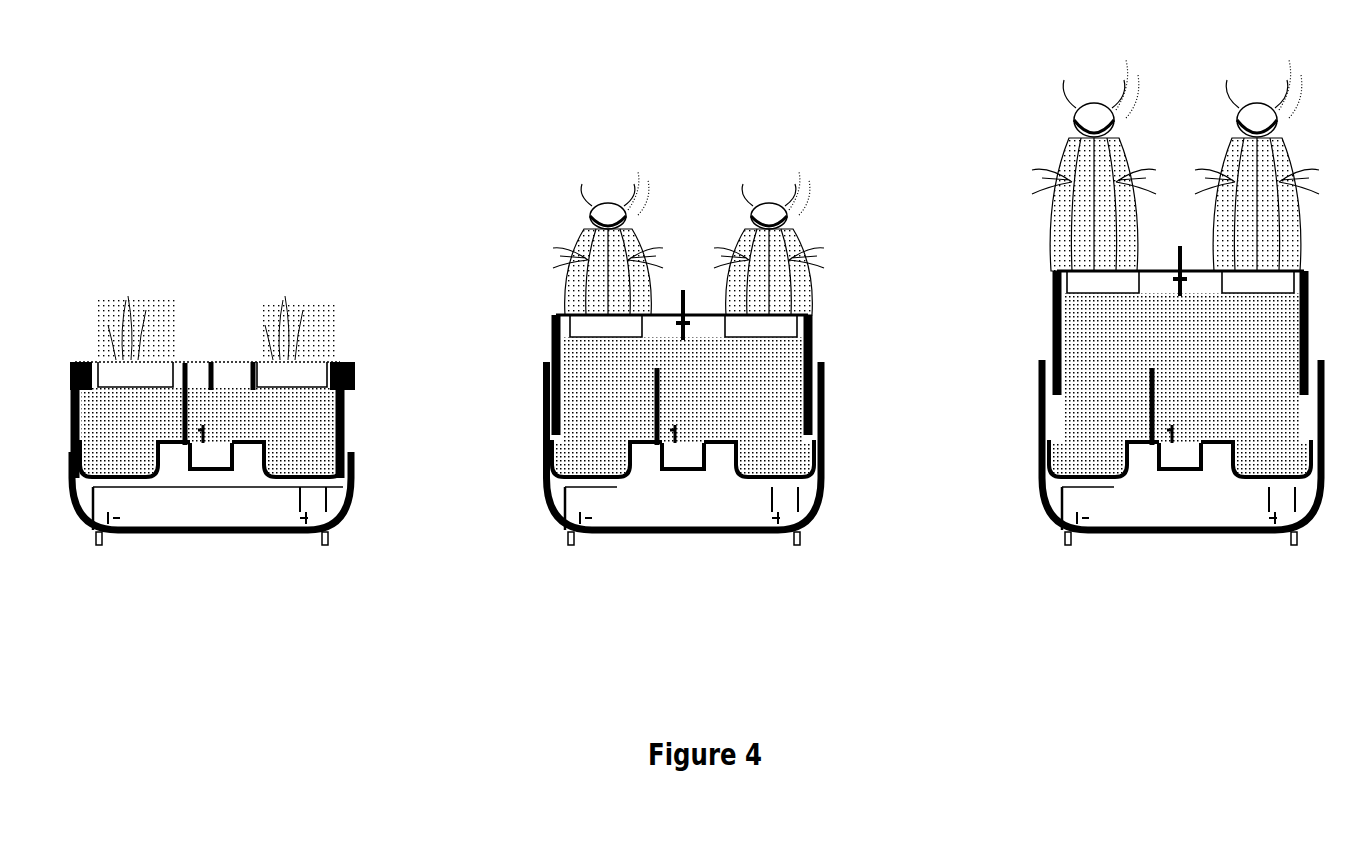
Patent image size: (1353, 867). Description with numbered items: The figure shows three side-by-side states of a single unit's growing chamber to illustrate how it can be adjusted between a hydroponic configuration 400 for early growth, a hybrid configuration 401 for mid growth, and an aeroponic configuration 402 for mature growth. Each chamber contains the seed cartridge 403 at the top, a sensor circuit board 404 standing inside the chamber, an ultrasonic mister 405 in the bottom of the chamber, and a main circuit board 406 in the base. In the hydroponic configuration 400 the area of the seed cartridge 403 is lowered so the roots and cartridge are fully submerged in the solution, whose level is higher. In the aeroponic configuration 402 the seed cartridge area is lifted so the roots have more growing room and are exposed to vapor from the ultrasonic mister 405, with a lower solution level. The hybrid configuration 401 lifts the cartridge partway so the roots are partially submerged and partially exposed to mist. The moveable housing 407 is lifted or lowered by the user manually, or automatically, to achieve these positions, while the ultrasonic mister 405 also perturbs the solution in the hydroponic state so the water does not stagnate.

The hydroponic configuration 400 is at (211, 463).
The hybrid configuration 401 is at (686, 401).
The aeroponic configuration 402 is at (1176, 345).
The seed cartridge 403 is at (1090, 294).
The sensor circuit board 404 is at (652, 408).
The ultrasonic mister 405 is at (678, 452).
The main circuit board 406 is at (145, 488).
The moveable housing 407 is at (1051, 322).